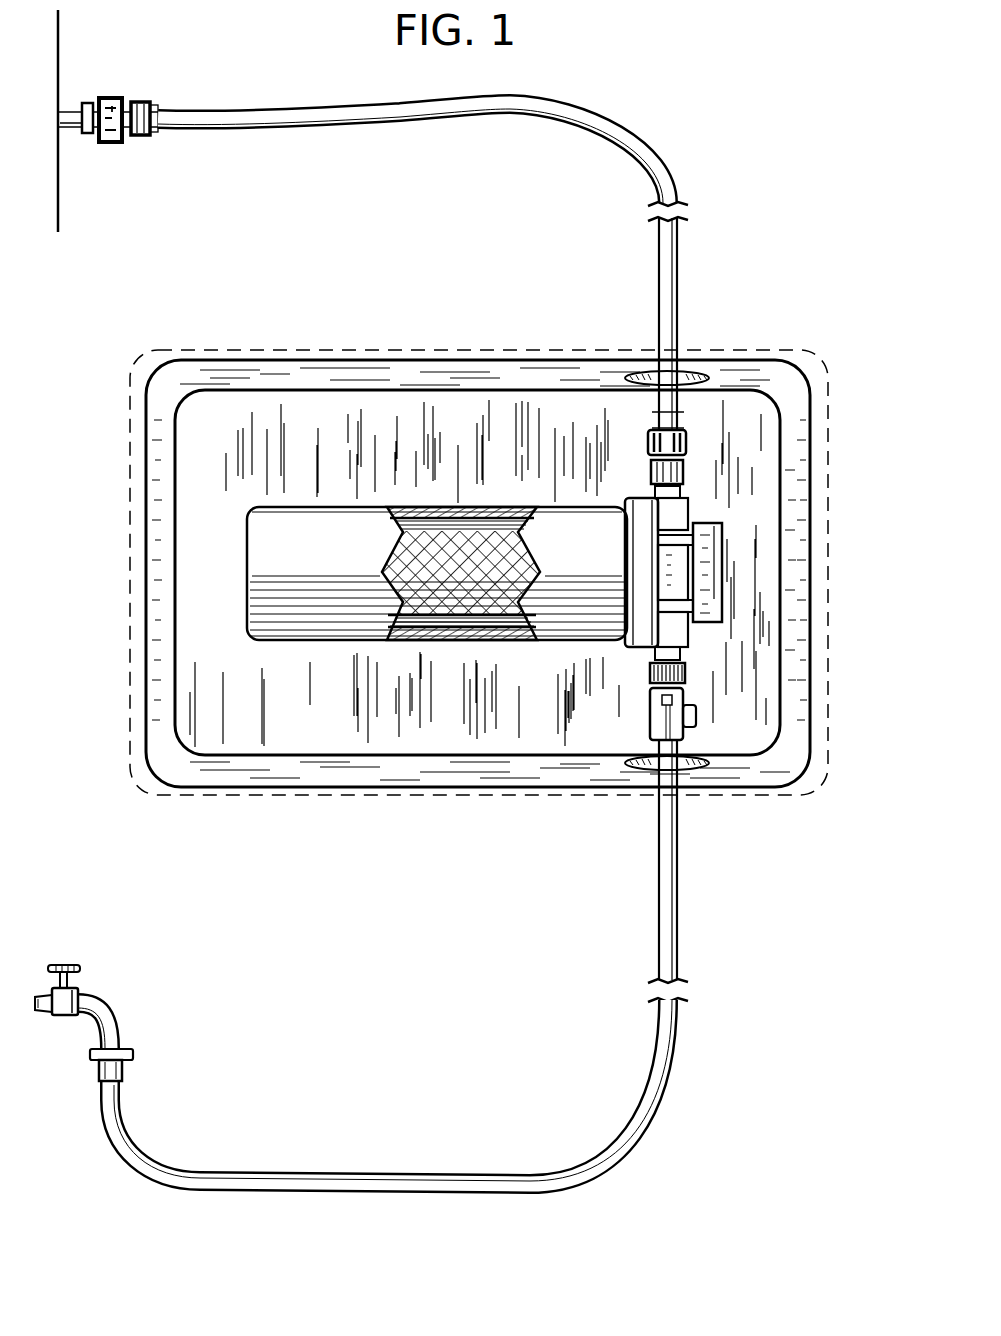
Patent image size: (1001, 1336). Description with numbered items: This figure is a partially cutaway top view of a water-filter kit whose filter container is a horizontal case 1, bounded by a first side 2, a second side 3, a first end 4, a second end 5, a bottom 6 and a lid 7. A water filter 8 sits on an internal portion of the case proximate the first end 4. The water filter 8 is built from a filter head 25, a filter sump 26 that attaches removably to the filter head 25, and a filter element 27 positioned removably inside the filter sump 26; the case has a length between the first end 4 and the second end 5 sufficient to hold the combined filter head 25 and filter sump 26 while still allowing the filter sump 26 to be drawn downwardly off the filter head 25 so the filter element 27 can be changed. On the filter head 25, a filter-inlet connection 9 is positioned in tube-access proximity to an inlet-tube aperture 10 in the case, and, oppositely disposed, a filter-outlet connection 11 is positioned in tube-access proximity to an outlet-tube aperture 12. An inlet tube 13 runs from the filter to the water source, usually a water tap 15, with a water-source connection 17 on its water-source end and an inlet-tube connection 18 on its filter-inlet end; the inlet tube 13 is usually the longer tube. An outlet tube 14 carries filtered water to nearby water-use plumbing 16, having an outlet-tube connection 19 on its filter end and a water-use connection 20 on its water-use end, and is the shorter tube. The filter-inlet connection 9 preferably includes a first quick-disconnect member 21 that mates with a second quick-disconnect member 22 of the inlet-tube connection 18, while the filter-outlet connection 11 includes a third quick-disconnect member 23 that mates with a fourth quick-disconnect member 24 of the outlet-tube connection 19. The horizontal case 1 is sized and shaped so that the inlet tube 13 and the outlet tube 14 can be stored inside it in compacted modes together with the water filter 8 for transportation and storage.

The horizontal case 1 is at (752, 350).
The first side 2 is at (360, 773).
The second side 3 is at (458, 372).
The first end 4 is at (792, 545).
The second end 5 is at (150, 578).
The bottom 6 is at (341, 410).
The lid 7 is at (148, 352).
The water filter 8 is at (543, 680).
The filter-inlet connection 9 is at (682, 653).
The inlet-tube aperture 10 is at (642, 767).
The filter-outlet connection 11 is at (690, 490).
The outlet-tube aperture 12 is at (658, 378).
The inlet tube 13 is at (678, 940).
The outlet tube 14 is at (680, 237).
The water tap 15 is at (88, 997).
The water-use plumbing 16 is at (70, 110).
The water-source connection 17 is at (125, 1050).
The inlet-tube connection 18 is at (718, 742).
The outlet-tube connection 19 is at (712, 397).
The water-use connection 20 is at (148, 75).
The first quick-disconnect member 21 is at (688, 673).
The second quick-disconnect member 22 is at (698, 715).
The third quick-disconnect member 23 is at (690, 465).
The fourth quick-disconnect member 24 is at (693, 437).
The filter head 25 is at (672, 585).
The filter sump 26 is at (322, 590).
The filter element 27 is at (455, 600).